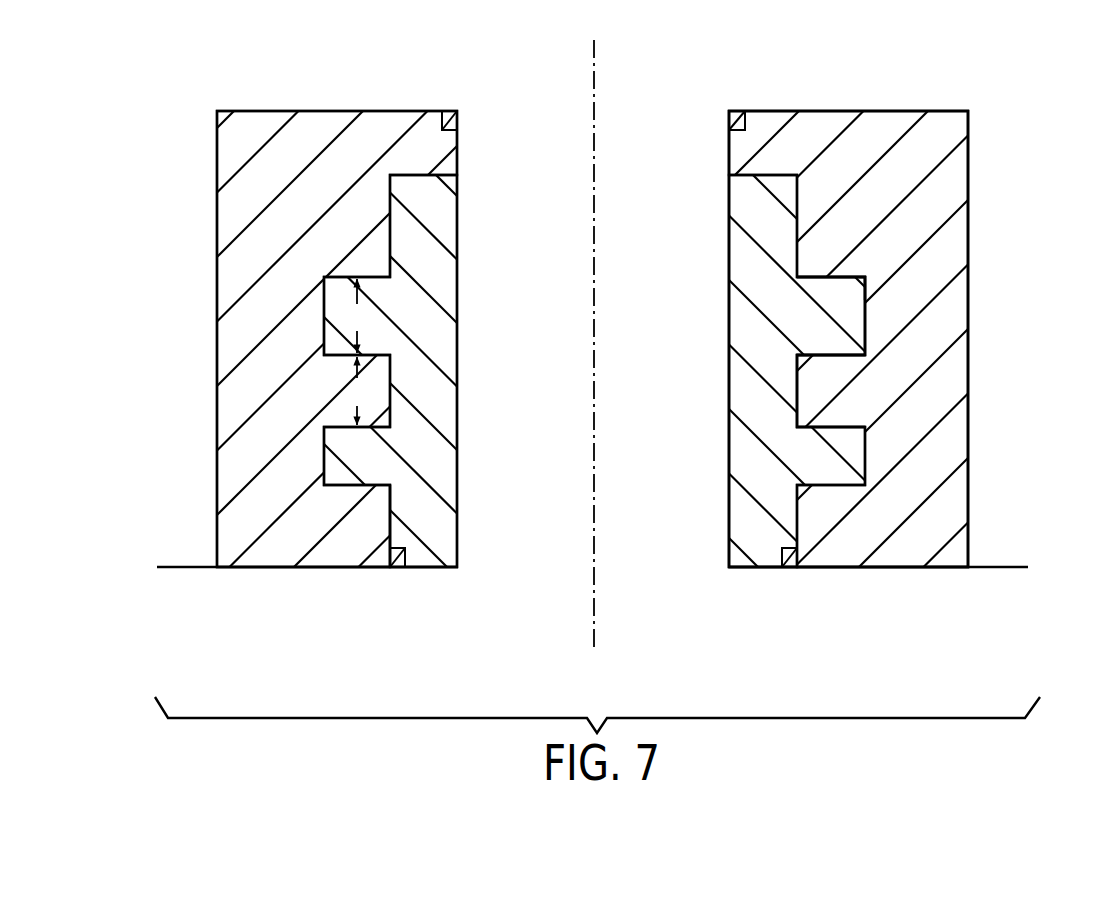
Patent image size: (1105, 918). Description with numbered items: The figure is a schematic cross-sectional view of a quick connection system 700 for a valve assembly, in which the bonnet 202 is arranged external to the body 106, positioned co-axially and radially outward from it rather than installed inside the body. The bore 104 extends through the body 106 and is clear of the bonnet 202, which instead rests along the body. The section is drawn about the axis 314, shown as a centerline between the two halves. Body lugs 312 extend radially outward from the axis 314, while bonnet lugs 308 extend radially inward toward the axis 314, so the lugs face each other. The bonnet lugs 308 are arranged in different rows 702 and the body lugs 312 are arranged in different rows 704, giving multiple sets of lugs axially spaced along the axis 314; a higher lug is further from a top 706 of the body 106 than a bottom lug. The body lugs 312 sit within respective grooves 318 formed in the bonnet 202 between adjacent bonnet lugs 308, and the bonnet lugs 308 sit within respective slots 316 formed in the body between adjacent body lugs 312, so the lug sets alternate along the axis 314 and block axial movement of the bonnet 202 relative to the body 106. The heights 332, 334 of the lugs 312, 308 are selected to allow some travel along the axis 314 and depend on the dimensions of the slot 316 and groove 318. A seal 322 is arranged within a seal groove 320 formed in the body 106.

The bore 104 is at (657, 195).
The body 106 is at (742, 494).
The bonnet 202 is at (343, 212).
The bonnet lugs 308 is at (822, 387).
The body lugs 312 is at (852, 316).
The axis 314 is at (594, 605).
The slots 316 is at (395, 350).
The grooves 318 is at (848, 277).
The seal groove 320 is at (400, 545).
The seal 322 is at (405, 551).
The height of body lugs 332 is at (357, 316).
The height of bonnet lugs 334 is at (357, 391).
The quick connection system 700 is at (998, 90).
The rows of bonnet lugs 702 is at (878, 258).
The rows of body lugs 704 is at (282, 300).
The top of the body 706 is at (187, 567).